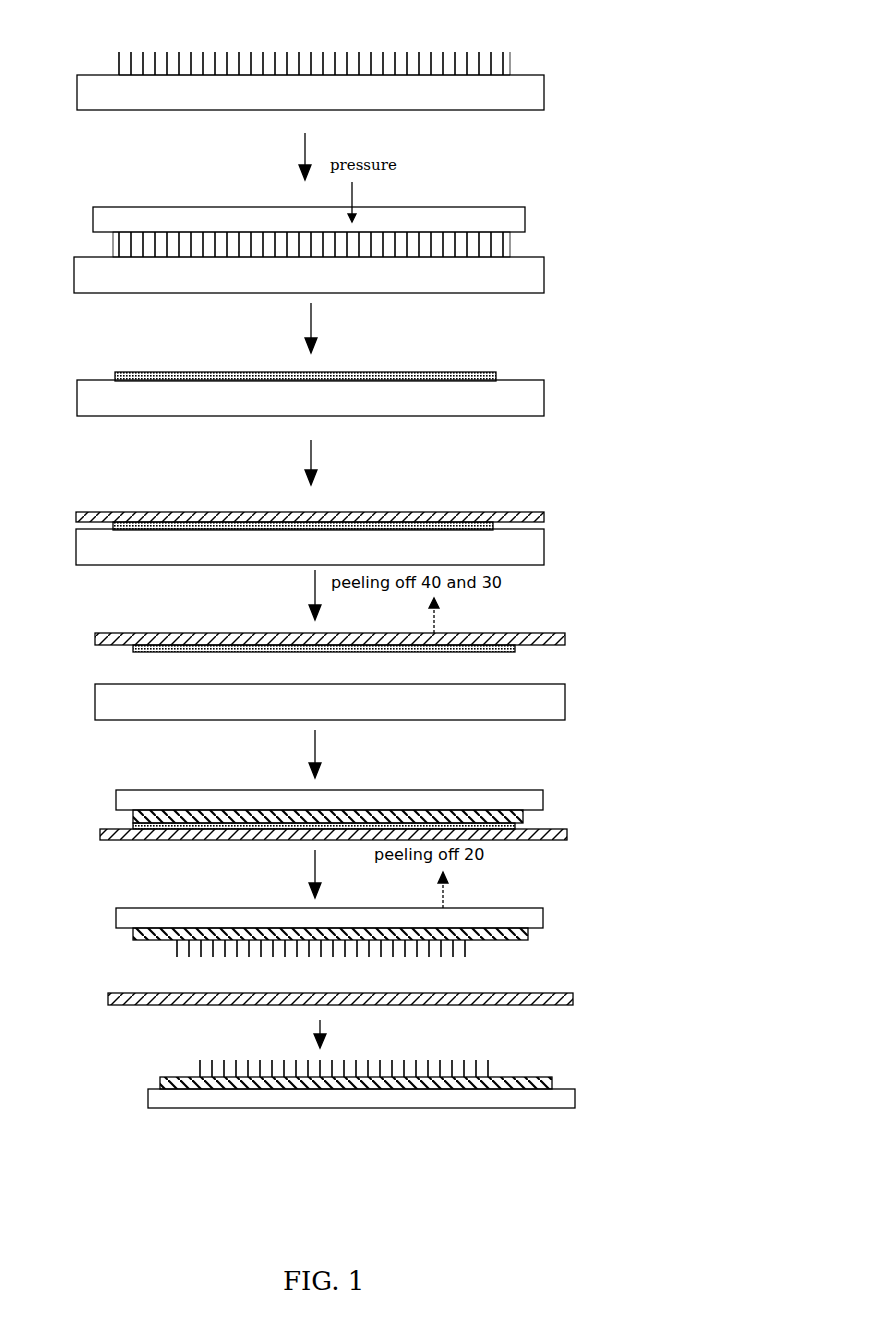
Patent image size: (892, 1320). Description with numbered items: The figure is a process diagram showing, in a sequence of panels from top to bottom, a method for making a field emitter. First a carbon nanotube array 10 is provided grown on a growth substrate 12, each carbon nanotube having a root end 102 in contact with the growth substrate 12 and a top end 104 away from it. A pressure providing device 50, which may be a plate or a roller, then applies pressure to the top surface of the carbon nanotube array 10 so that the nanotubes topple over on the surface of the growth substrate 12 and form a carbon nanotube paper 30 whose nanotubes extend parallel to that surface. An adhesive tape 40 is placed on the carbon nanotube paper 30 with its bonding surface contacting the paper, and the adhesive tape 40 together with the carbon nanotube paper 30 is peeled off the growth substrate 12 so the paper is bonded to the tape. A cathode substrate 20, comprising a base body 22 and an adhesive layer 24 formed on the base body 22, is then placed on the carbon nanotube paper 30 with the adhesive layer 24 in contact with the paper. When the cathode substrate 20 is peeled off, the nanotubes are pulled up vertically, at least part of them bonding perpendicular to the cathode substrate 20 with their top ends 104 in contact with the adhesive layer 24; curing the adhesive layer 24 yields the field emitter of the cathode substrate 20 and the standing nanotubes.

The carbon nanotube array 10 is at (152, 50).
The growth substrate 12 is at (508, 96).
The root end 102 is at (510, 75).
The top end 104 is at (511, 52).
The pressure providing device 50 is at (494, 207).
The carbon nanotube paper 30 is at (487, 372).
The adhesive tape 40 is at (473, 512).
The cathode substrate 20 is at (344, 923).
The base body 22 is at (143, 790).
The adhesive layer 24 is at (135, 816).